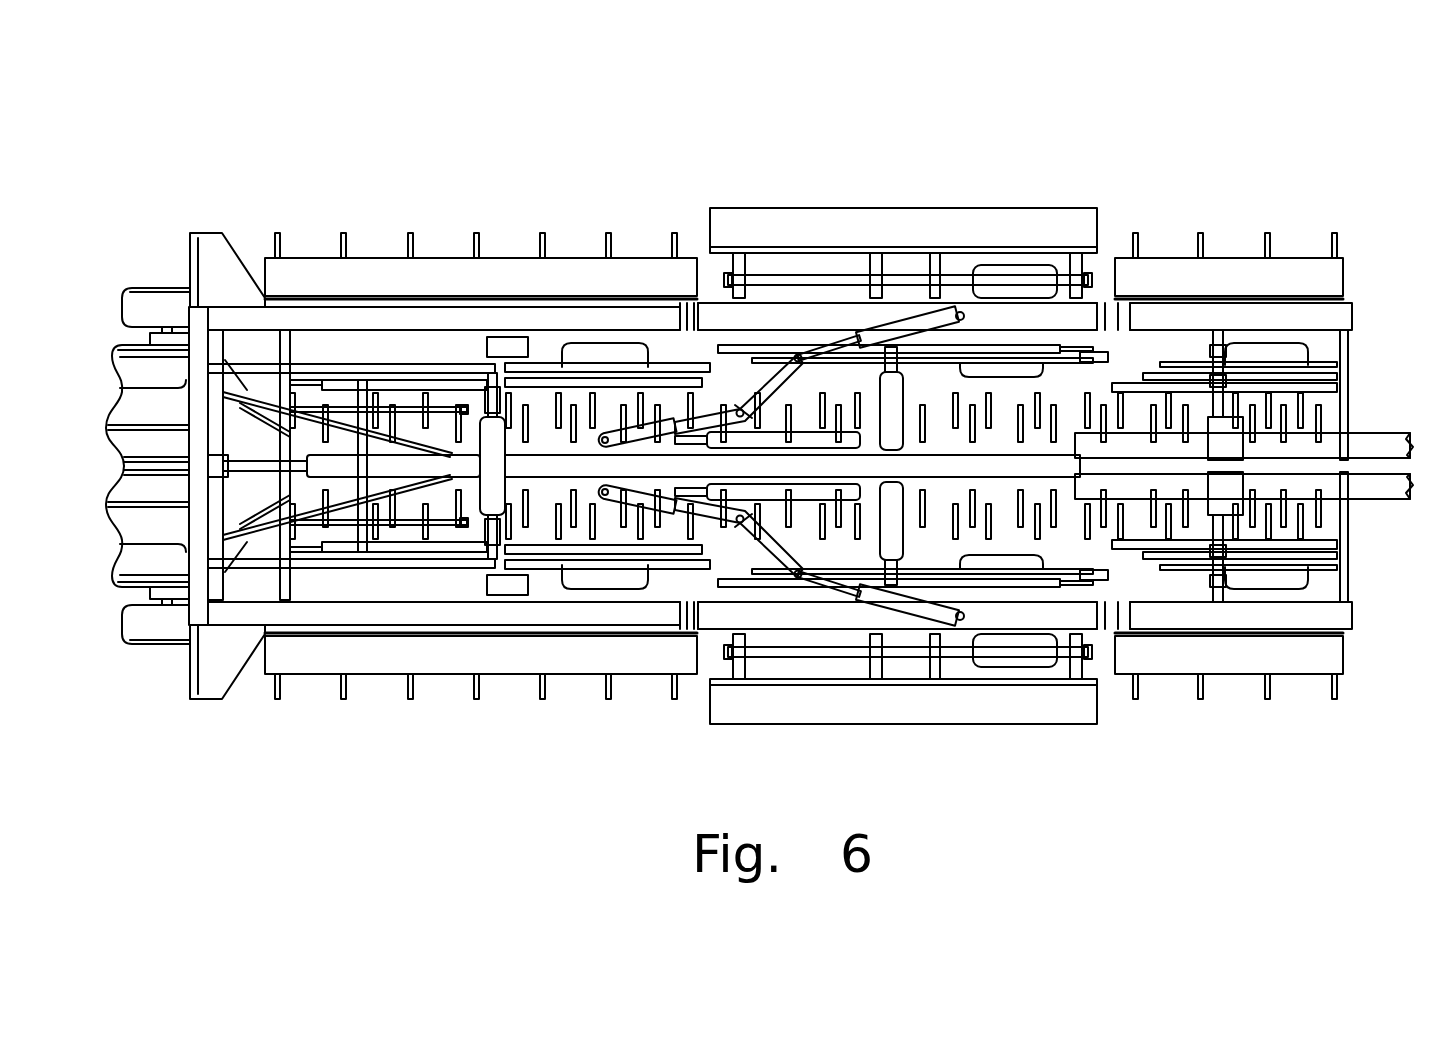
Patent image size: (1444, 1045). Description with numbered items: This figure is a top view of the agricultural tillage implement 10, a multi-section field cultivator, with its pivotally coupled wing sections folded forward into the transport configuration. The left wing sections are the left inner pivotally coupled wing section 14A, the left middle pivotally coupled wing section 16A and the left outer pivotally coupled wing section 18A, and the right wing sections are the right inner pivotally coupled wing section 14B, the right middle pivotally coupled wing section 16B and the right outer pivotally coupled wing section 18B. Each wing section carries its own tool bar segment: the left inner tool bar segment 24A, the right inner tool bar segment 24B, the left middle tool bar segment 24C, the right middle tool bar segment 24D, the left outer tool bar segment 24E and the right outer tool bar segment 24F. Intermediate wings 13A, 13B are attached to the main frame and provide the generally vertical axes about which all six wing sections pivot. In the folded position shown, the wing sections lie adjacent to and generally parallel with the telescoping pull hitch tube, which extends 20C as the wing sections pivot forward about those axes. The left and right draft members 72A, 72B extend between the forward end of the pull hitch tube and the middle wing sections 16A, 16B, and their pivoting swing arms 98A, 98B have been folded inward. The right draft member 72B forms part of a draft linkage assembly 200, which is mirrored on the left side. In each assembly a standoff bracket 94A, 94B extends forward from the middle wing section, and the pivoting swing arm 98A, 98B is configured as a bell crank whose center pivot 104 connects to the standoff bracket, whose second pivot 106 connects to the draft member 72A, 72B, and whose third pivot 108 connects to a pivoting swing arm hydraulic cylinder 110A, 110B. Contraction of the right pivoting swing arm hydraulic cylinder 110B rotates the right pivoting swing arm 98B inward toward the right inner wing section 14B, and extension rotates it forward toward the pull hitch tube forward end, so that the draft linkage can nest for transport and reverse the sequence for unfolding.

The agricultural tillage implement 10 is at (338, 163).
The intermediate wing 13A is at (233, 253).
The intermediate wing 13B is at (228, 680).
The left inner pivotally coupled wing section 14A is at (507, 246).
The right inner pivotally coupled wing section 14B is at (510, 680).
The left middle pivotally coupled wing section 16A is at (900, 200).
The right middle pivotally coupled wing section 16B is at (913, 728).
The left outer pivotally coupled wing section 18A is at (1233, 246).
The right outer pivotally coupled wing section 18B is at (1237, 700).
The left inner tool bar segment 24A is at (375, 315).
The right inner tool bar segment 24B is at (455, 616).
The left middle tool bar segment 24C is at (1087, 317).
The right middle tool bar segment 24D is at (1040, 618).
The left outer tool bar segment 24E is at (1345, 318).
The right outer tool bar segment 24F is at (1345, 612).
The extension of telescoping pull hitch tube 20C is at (862, 452).
The left draft member 72A is at (1073, 437).
The right draft member 72B is at (1075, 493).
The left standoff bracket 94A is at (760, 317).
The right standoff bracket 94B is at (760, 615).
The left pivoting swing arm 98A is at (712, 412).
The right pivoting swing arm 98B is at (712, 520).
The pivoting swing arm center pivot 104 is at (757, 385).
The pivoting swing arm second pivot 106 is at (601, 437).
The pivoting swing arm third pivot 108 is at (798, 357).
The left pivoting swing arm hydraulic cylinder 110A is at (908, 333).
The right pivoting swing arm hydraulic cylinder 110B is at (908, 599).
The draft linkage assembly 200 is at (740, 377).